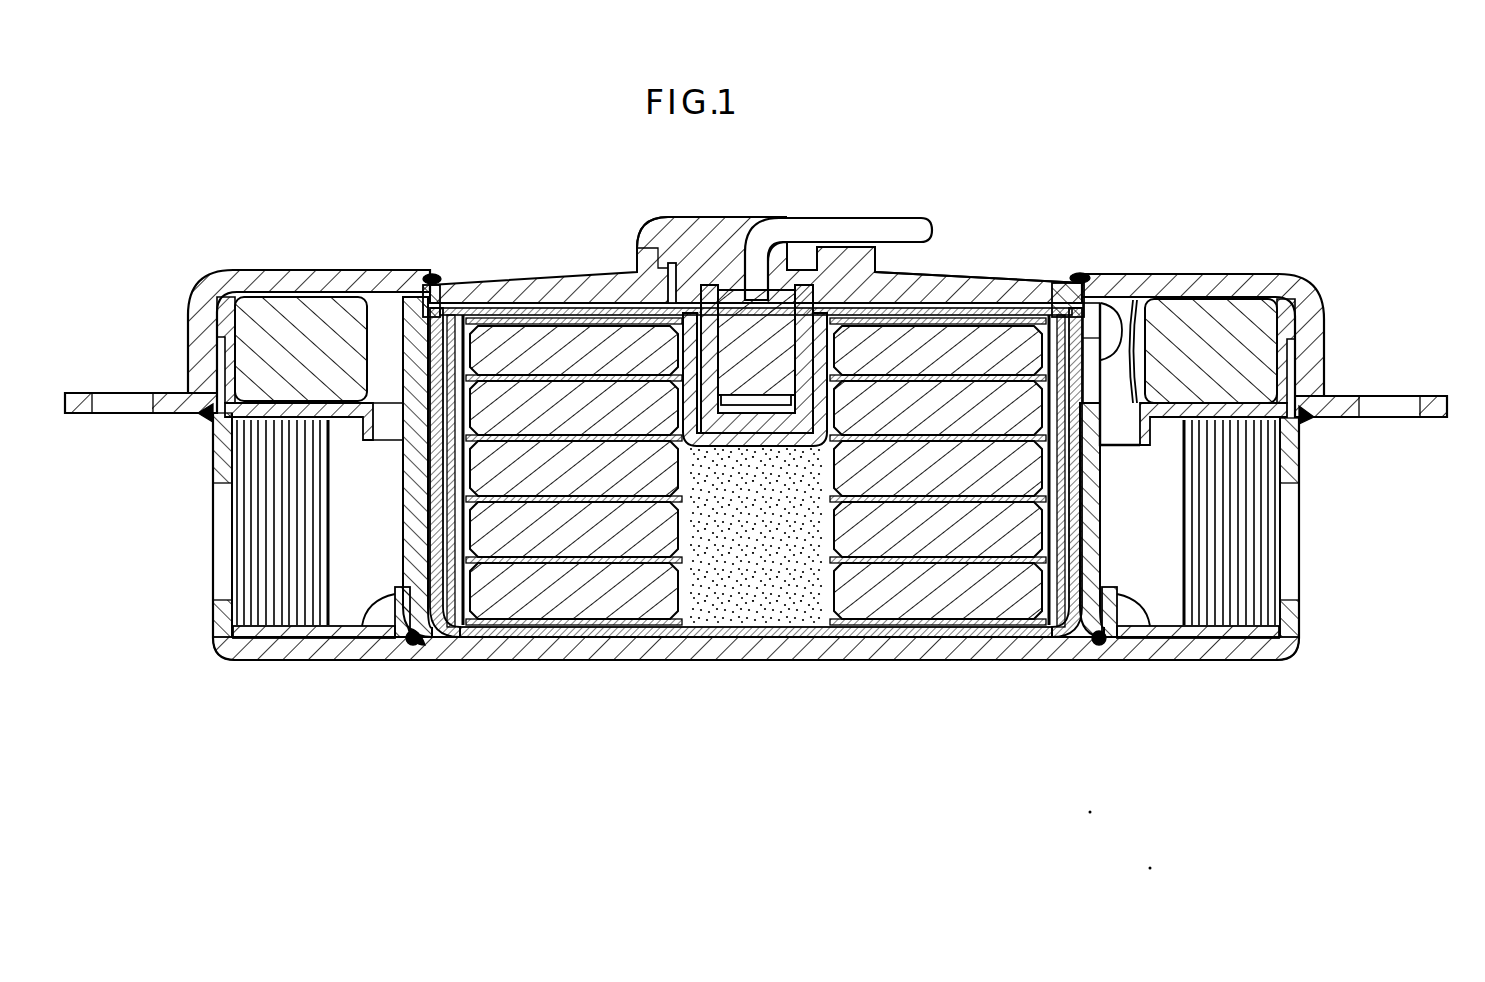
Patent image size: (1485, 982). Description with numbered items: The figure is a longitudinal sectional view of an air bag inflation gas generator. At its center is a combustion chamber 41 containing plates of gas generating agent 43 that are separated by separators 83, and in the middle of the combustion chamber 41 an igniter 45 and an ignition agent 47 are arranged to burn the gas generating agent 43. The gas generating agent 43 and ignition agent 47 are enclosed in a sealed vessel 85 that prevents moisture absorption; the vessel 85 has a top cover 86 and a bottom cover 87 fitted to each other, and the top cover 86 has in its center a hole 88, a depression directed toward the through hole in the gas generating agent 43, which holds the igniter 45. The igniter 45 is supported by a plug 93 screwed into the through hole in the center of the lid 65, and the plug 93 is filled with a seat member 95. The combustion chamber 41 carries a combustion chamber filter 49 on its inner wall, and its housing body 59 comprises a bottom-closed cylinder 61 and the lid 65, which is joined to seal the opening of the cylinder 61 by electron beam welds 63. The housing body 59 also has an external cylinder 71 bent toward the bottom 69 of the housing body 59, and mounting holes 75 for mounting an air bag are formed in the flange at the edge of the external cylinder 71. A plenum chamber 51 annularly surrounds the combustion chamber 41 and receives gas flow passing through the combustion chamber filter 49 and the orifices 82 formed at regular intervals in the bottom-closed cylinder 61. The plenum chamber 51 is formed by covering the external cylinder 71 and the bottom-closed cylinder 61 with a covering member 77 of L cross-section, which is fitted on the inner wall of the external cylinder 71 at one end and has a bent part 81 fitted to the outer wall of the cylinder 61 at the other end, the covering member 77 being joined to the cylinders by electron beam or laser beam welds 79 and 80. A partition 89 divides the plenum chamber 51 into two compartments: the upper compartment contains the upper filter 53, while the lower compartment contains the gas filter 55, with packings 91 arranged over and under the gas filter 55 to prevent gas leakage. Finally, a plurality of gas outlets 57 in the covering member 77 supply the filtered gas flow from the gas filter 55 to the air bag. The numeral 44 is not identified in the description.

The combustion chamber 41 is at (508, 585).
The gas generating agent 43 is at (505, 330).
The inner liner 44 is at (690, 595).
The igniter 45 is at (782, 330).
The ignition agent 47 is at (795, 600).
The combustion chamber filter 49 is at (1047, 627).
The plenum chamber 51 is at (1158, 598).
The upper filter 53 is at (1212, 310).
The gas filter 55 is at (1255, 578).
The gas outlets 57 is at (218, 508).
The housing body 59 is at (287, 262).
The bottom-closed cylinder 61 is at (1098, 548).
The electron beam welds 63 is at (433, 277).
The lid 65 is at (573, 290).
The bottom 69 is at (617, 645).
The external cylinder 71 is at (1320, 352).
The mounting holes 75 is at (112, 397).
The covering member 77 is at (250, 650).
The electron beam or laser beam weld 79 is at (204, 416).
The electron beam or laser beam weld 80 is at (410, 652).
The bent part 81 is at (362, 548).
The orifices 82 is at (413, 350).
The separators 83 is at (901, 565).
The sealed vessel 85 is at (755, 646).
The top cover 86 is at (963, 305).
The bottom cover 87 is at (836, 637).
The hole 88 is at (703, 350).
The partition 89 is at (1134, 300).
The packings 91 is at (356, 432).
The plug 93 is at (661, 247).
The seat member 95 is at (750, 234).